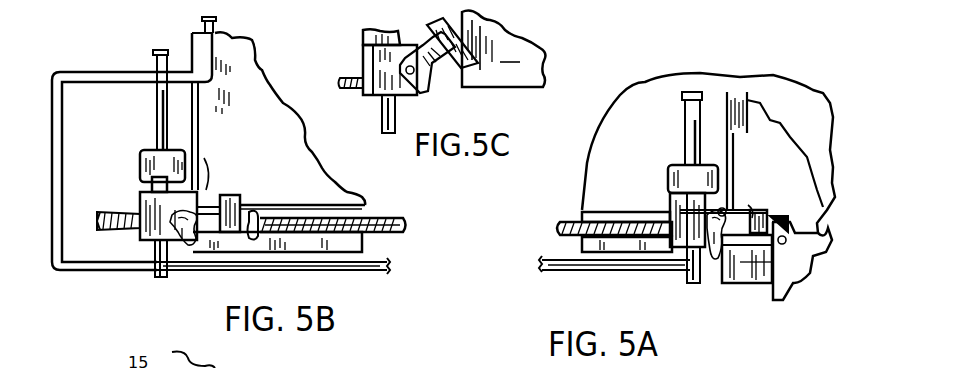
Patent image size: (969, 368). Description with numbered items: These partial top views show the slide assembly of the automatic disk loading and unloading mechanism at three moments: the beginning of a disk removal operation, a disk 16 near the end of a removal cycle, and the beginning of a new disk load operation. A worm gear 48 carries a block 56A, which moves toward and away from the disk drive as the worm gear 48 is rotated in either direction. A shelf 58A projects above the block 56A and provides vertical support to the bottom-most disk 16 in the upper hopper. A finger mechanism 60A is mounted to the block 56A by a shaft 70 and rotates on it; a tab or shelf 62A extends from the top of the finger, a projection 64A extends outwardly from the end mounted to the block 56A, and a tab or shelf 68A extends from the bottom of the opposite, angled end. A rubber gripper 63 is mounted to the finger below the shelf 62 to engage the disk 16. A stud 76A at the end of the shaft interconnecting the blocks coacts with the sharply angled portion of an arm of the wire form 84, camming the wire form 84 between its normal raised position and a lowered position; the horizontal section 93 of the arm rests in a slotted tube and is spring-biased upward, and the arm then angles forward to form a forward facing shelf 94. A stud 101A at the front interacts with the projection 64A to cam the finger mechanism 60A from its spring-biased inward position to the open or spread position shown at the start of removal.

In FIG. 5B, the disk 16 is at (307, 194).
In FIG. 5C, the disk 16 is at (532, 53).
In FIG. 5A, the disk 16 is at (789, 170).
In FIG. 5B, the worm gear 48 is at (387, 218).
In FIG. 5A, the worm gear 48 is at (570, 217).
In FIG. 5B, the block 56A is at (143, 202).
In FIG. 5C, the block 56A is at (365, 64).
In FIG. 5A, the block 56A is at (683, 210).
In FIG. 5B, the shelf 58A is at (145, 150).
In FIG. 5C, the shelf 58A is at (365, 34).
In FIG. 5A, the shelf 58A is at (681, 165).
In FIG. 5B, the finger mechanism 60A is at (214, 204).
In FIG. 5C, the finger mechanism 60A is at (413, 58).
In FIG. 5A, the finger mechanism 60A is at (730, 283).
In FIG. 5B, the shelf 62 is at (251, 195).
In FIG. 5C, the tab or shelf 62A is at (468, 65).
In FIG. 5A, the tab or shelf 62A is at (769, 212).
In FIG. 5B, the gripper 63 is at (213, 160).
In FIG. 5A, the gripper 63 is at (750, 212).
In FIG. 5B, the projection 64A is at (188, 248).
In FIG. 5A, the projection 64A is at (712, 275).
In FIG. 5B, the tab or shelf 68A is at (244, 200).
In FIG. 5C, the tab or shelf 68A is at (505, 34).
In FIG. 5A, the tab or shelf 68A is at (812, 247).
In FIG. 5C, the shaft 70 is at (403, 93).
In FIG. 5A, the shaft 70 is at (725, 203).
In FIG. 5B, the stud 76A is at (155, 250).
In FIG. 5C, the stud 76A is at (382, 117).
In FIG. 5A, the stud 76A is at (687, 273).
In FIG. 5B, the wire form 84 is at (343, 272).
In FIG. 5A, the wire form 84 is at (572, 271).
In FIG. 5B, the horizontal section 93 is at (56, 170).
In FIG. 5B, the forward facing shelf 94 is at (217, 36).
In FIG. 5A, the stud or projection 101A is at (758, 274).